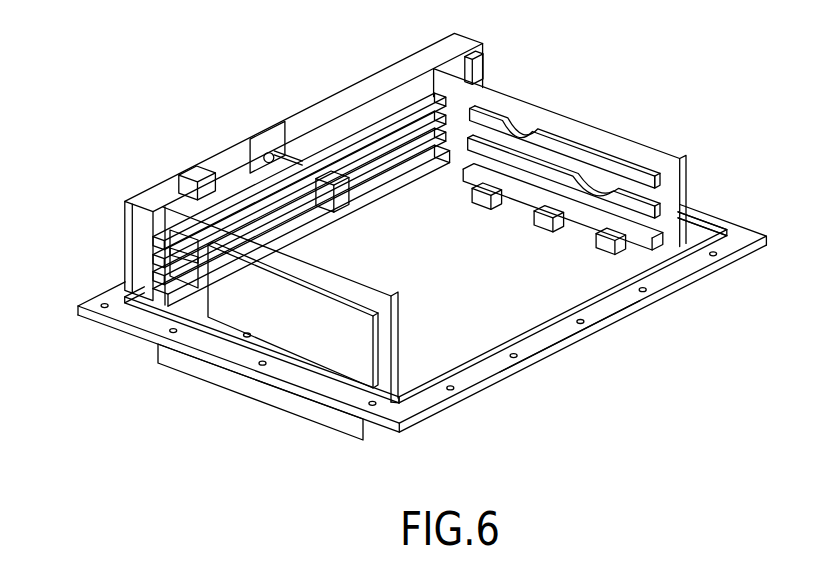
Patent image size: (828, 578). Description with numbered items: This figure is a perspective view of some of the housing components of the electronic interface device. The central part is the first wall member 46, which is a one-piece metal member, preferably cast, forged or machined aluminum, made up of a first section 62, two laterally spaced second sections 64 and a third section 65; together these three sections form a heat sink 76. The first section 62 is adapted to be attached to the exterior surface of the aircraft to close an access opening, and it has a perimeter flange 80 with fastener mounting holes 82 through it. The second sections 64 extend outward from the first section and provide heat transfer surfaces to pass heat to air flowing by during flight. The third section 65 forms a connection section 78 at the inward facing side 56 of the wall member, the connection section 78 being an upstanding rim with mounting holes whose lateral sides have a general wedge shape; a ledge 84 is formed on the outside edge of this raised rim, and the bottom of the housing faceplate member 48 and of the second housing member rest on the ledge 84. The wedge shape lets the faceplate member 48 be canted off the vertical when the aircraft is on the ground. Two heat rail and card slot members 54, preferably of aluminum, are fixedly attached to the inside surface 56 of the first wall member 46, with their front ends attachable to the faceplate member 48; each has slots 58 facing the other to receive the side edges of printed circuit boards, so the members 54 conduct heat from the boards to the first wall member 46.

The first wall member 46 is at (527, 368).
The housing faceplate member 48 is at (338, 98).
The heat rail and card slot members 54 is at (362, 280).
The inside surface 56 is at (530, 308).
The slots 58 is at (643, 223).
The first section 62 is at (452, 352).
The second section 64 is at (313, 408).
The third section 65 is at (577, 226).
The heat sink 76 is at (595, 315).
The connection section 78 is at (386, 405).
The perimeter flange 80 is at (739, 236).
The fastener mounting holes 82 is at (148, 331).
The ledge 84 is at (241, 340).